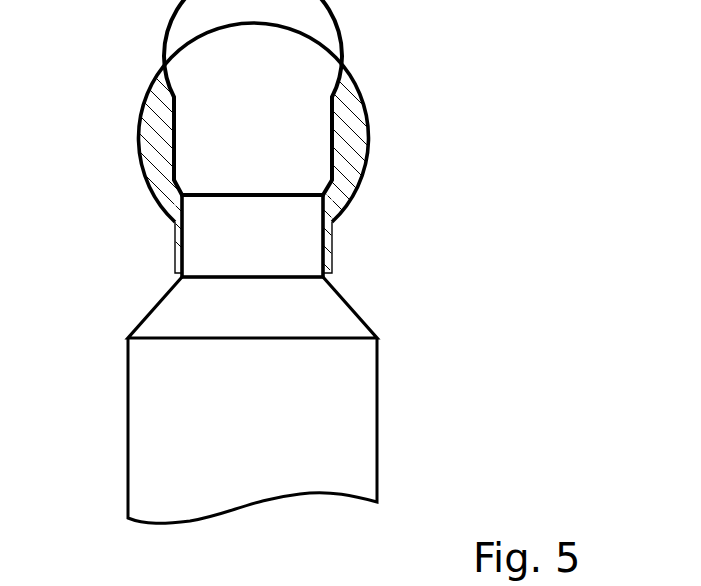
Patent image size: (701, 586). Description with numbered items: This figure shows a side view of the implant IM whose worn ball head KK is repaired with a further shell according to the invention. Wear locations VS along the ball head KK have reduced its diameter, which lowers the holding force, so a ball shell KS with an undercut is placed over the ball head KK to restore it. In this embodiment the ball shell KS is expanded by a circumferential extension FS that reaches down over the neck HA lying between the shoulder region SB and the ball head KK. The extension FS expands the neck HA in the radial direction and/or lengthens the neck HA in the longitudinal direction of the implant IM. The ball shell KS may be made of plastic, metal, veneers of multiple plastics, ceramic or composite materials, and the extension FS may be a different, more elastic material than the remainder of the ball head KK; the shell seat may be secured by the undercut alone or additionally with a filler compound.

The ball shell KS is at (298, 42).
The ball head KK is at (252, 125).
The wear locations VS is at (333, 137).
The neck HA is at (228, 236).
The circumferential extension FS is at (330, 233).
The shoulder region SB is at (227, 309).
The implant IM is at (322, 412).